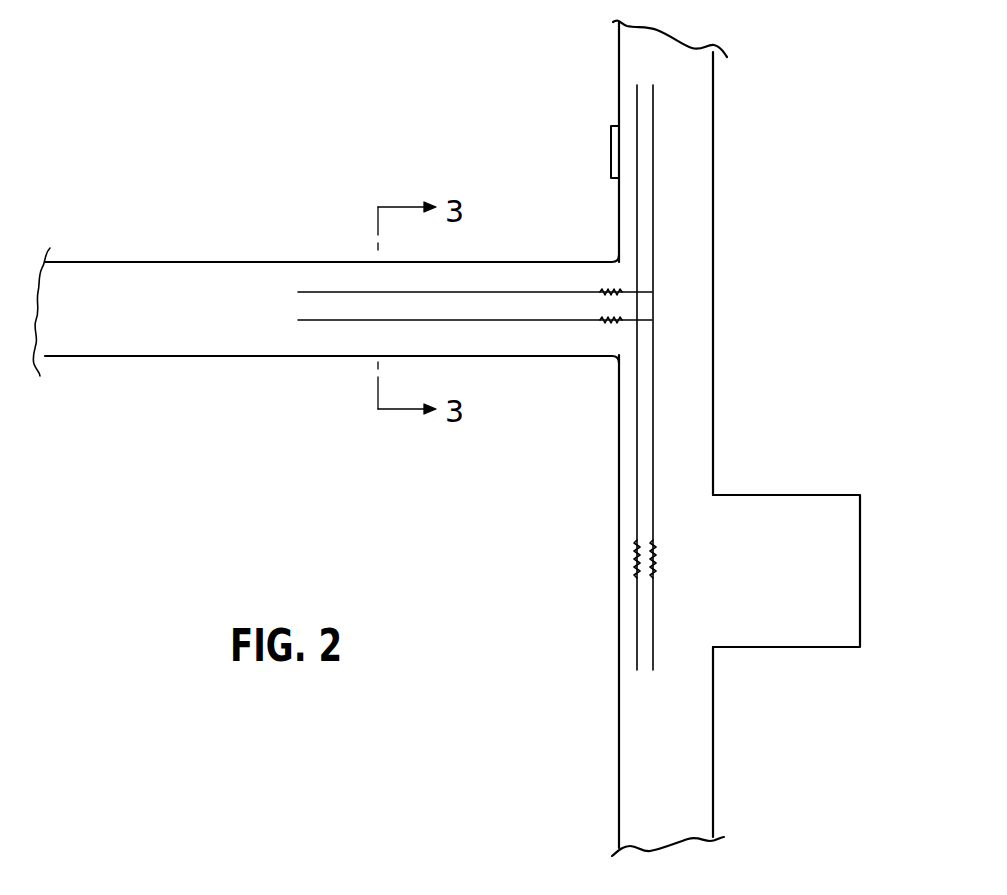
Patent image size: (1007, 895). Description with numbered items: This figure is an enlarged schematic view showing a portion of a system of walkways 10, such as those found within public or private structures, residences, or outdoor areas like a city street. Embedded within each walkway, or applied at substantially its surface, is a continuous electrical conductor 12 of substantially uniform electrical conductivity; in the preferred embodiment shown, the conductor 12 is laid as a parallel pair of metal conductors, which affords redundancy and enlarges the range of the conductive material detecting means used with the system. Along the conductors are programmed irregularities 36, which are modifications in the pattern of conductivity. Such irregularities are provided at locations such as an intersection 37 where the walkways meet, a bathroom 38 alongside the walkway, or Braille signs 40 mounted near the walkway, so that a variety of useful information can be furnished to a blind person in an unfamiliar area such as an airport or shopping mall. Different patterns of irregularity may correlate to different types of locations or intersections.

The walkway 10 is at (133, 292).
The electrical conductor 12 is at (480, 320).
The programmed irregularities 36 is at (605, 320).
The intersection 37 is at (652, 300).
The bathroom 38 is at (783, 515).
The Braille signs 40 is at (610, 148).